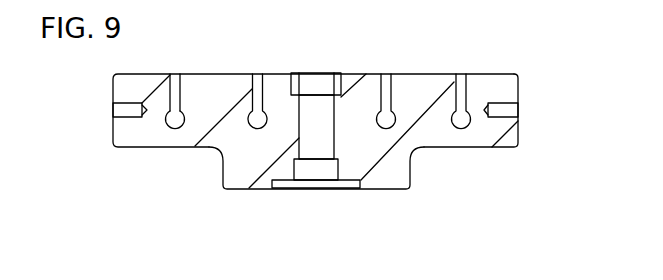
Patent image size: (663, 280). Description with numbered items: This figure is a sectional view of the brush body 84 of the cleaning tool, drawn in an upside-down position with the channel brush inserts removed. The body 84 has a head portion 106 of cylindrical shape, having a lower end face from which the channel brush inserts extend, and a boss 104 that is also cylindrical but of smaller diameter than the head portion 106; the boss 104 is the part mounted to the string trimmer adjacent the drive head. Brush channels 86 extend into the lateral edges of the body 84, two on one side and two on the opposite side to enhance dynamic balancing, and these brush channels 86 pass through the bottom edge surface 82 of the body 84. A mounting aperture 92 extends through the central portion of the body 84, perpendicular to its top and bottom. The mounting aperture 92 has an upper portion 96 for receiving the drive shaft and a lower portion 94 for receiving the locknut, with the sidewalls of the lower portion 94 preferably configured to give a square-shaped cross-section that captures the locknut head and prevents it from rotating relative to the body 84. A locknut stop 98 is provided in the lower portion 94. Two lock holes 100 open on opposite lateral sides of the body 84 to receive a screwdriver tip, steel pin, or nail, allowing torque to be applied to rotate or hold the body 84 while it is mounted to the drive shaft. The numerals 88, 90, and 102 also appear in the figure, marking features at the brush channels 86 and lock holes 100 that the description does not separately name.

The bottom edge surface 82 is at (486, 73).
The brush body 84 is at (437, 42).
The brush channels 86 is at (198, 63).
The relief hole 88 is at (175, 125).
The groove 90 is at (175, 92).
The mounting aperture 92 is at (287, 190).
The lower portion 94 is at (317, 108).
The upper portion 96 is at (317, 170).
The locknut stop 98 is at (296, 93).
The lock holes 100 is at (131, 108).
The recess tip 102 is at (144, 113).
The boss 104 is at (392, 173).
The head portion 106 is at (497, 93).